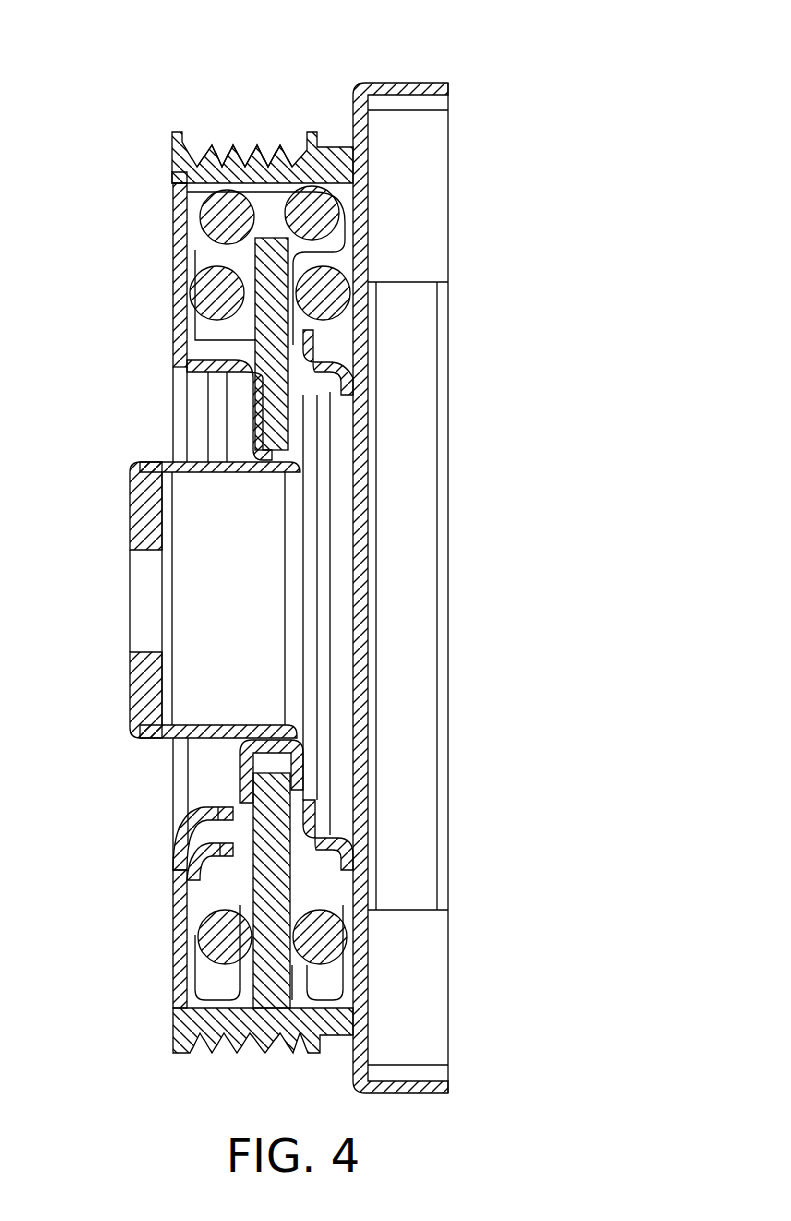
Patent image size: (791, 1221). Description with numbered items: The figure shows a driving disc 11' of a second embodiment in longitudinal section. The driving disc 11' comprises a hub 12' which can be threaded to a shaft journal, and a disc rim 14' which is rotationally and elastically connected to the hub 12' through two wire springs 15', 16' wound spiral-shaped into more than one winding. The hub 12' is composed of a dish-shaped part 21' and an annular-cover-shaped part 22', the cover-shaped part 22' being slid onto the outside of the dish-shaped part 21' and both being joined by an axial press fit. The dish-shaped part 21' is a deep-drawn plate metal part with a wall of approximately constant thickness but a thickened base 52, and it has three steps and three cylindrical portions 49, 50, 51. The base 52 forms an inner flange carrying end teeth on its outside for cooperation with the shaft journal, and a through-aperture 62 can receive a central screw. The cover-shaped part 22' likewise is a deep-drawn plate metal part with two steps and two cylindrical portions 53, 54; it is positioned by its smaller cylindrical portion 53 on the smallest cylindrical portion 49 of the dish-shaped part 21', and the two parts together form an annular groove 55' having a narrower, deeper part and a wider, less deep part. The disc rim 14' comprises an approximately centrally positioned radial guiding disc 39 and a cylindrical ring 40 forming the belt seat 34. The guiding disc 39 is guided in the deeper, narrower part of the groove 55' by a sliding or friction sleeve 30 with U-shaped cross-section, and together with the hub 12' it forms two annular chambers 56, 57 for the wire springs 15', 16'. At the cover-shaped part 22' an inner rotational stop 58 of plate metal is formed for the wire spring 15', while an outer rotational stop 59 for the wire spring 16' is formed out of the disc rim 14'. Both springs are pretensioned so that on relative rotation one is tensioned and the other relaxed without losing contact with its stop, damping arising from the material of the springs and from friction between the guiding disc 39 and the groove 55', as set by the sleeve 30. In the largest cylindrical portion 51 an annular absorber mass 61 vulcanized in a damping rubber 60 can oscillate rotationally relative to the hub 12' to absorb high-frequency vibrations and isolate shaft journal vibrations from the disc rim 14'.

The driving disc 11' is at (480, 564).
The hub 12' is at (159, 607).
The disc rim 14' is at (244, 484).
The wire spring 15' is at (231, 996).
The wire spring 16' is at (325, 996).
The dish-shaped part 21' is at (233, 956).
The annular-cover-shaped part 22' is at (175, 742).
The sliding or friction sleeve 30 is at (263, 740).
The belt seat 34 is at (285, 160).
The radial guiding disc 39 is at (173, 327).
The cylindrical ring 40 is at (173, 175).
The cylindrical portion 49 is at (185, 466).
The cylindrical portion 50 is at (340, 370).
The cylindrical portion 51 is at (410, 83).
The base 52 is at (140, 540).
The cylindrical portion 53 is at (255, 467).
The cylindrical portion 54 is at (185, 368).
The annular groove 55' is at (244, 133).
The annular chamber 56 is at (215, 990).
The annular chamber 57 is at (313, 990).
The inner rotational stop 58 is at (193, 823).
The outer rotational stop 59 is at (350, 227).
The damping rubber 60 is at (438, 1080).
The annular absorber mass 61 is at (430, 1013).
The through-aperture 62 is at (147, 648).